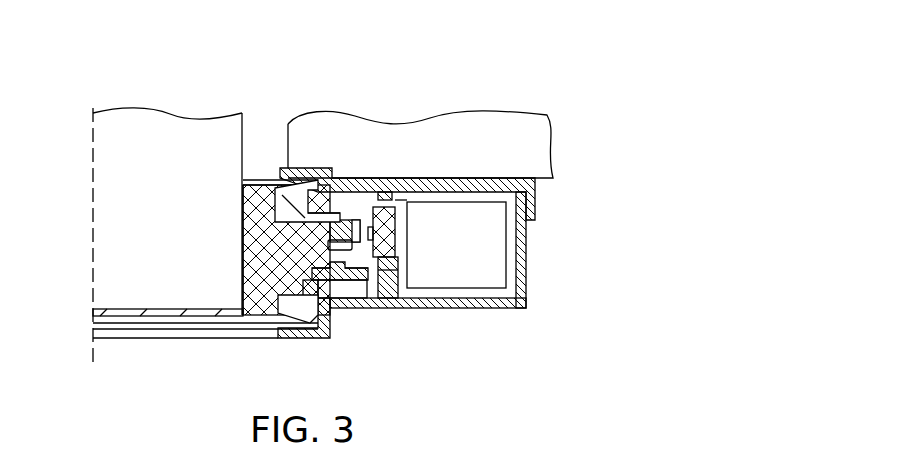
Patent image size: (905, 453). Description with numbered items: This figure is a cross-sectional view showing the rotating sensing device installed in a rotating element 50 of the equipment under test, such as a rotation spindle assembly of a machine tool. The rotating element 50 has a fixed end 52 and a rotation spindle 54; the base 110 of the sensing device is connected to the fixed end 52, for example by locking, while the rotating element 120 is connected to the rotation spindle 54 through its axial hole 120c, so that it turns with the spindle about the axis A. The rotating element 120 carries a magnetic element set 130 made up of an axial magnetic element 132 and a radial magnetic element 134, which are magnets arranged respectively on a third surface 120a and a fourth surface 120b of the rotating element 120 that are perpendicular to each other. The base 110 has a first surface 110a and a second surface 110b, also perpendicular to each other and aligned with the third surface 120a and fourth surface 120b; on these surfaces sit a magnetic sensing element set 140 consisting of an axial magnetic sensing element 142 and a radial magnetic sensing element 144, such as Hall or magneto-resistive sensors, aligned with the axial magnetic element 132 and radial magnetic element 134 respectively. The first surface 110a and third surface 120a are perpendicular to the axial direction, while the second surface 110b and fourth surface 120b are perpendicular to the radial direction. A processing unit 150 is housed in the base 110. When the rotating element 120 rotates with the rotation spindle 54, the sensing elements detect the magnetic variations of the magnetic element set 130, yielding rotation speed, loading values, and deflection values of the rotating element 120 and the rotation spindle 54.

The axis A is at (93, 350).
The rotating element of equipment under test 50 is at (323, 175).
The fixed end 52 is at (293, 130).
The rotation spindle 54 is at (241, 128).
The base 110 is at (451, 310).
The first surface 110a is at (323, 283).
The second surface 110b is at (398, 233).
The rotating element 120 is at (258, 300).
The third surface 120a is at (340, 238).
The fourth surface 120b is at (374, 232).
The axial hole 120c is at (241, 269).
The magnetic element set 130 is at (243, 138).
The axial magnetic element 132 is at (348, 236).
The radial magnetic element 134 is at (336, 240).
The magnetic sensing element set 140 is at (365, 337).
The axial magnetic sensing element 142 is at (336, 284).
The radial magnetic sensing element 144 is at (378, 290).
The processing unit 150 is at (502, 245).